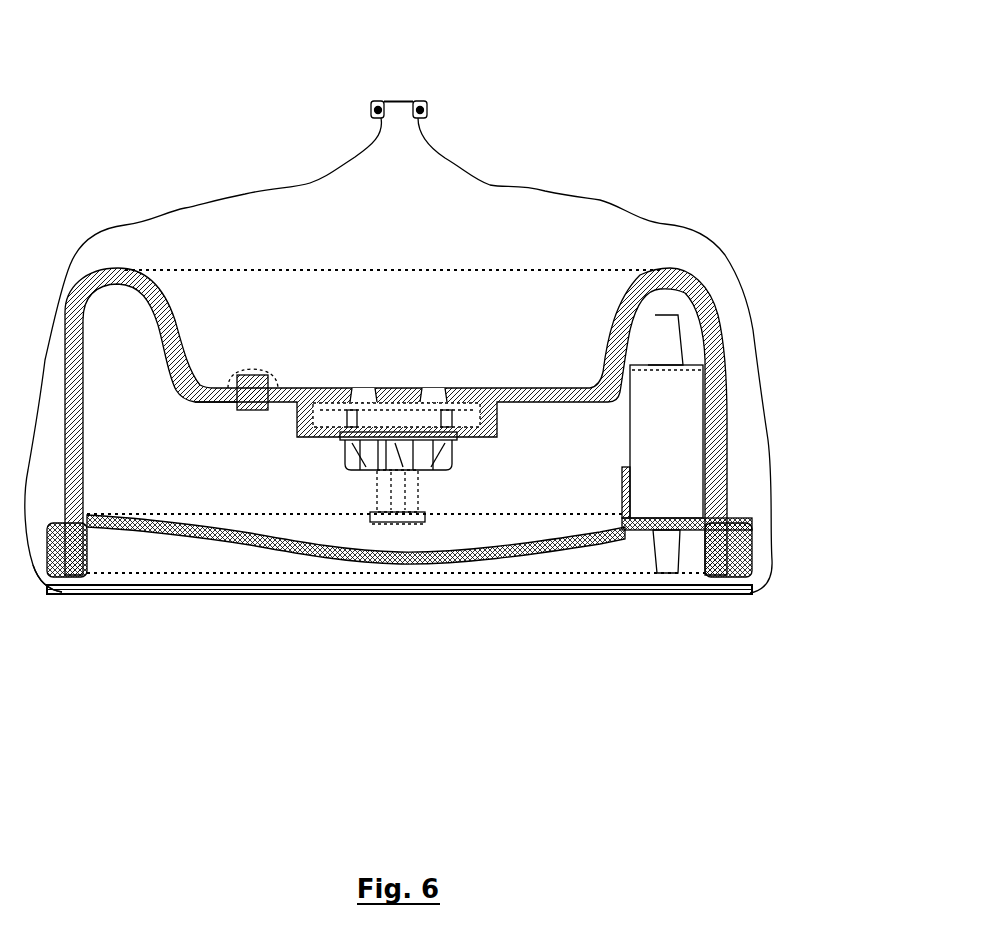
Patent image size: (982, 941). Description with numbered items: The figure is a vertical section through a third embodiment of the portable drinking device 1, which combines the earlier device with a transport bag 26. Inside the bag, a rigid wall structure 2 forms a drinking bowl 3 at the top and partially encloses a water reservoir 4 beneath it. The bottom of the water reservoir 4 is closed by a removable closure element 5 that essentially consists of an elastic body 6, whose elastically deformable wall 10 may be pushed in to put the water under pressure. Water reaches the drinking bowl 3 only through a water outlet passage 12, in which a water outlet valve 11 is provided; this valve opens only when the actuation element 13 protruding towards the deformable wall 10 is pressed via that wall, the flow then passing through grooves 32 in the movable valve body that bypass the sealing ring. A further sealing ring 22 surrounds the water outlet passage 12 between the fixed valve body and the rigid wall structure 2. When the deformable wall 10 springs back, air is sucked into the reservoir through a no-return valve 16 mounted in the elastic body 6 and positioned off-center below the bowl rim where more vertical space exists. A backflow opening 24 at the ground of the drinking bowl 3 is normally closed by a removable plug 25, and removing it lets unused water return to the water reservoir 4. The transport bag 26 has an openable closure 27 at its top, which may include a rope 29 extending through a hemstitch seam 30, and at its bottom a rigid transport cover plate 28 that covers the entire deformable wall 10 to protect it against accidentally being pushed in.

The portable drinking device 1 is at (727, 157).
The rigid wall structure 2 is at (723, 370).
The drinking bowl 3 is at (562, 322).
The water reservoir 4 is at (137, 437).
The removable closure element 5 is at (62, 586).
The elastic body 6 is at (167, 543).
The elastically deformable wall 10 is at (380, 557).
The water outlet valve 11 is at (345, 478).
The water outlet passage 12 is at (438, 394).
The actuation element 13 is at (423, 588).
The no-return valve 16 is at (680, 455).
The further sealing ring 22 is at (333, 407).
The backflow opening 24 is at (228, 399).
The removable plug 25 is at (248, 392).
The transport bag 26 is at (740, 298).
The openable closure 27 is at (400, 67).
The rigid transport cover plate 28 is at (233, 592).
The rope 29 is at (426, 109).
The hemstitch seam 30 is at (374, 109).
The grooves 32 is at (407, 488).